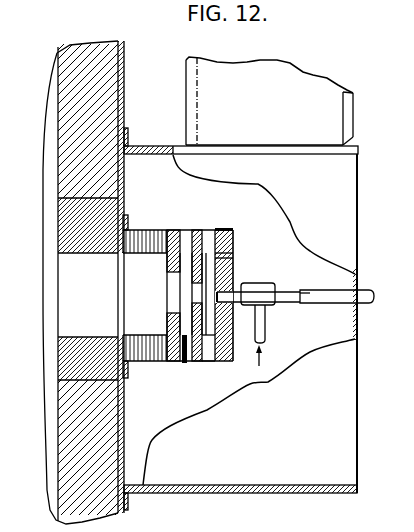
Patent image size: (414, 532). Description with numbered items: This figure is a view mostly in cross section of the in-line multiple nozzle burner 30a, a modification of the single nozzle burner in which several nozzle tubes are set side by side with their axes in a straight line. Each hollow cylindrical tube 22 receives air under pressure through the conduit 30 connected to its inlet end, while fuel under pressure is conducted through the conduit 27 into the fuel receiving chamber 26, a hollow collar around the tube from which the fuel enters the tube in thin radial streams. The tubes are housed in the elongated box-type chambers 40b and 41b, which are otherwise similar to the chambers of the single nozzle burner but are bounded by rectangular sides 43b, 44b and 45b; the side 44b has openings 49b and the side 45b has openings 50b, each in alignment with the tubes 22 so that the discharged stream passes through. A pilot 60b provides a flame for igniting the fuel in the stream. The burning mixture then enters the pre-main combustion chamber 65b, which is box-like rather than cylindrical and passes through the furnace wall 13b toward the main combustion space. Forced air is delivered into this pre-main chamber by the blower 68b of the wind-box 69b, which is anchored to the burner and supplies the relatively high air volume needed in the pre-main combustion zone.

The furnace wall 13b is at (92, 50).
The pre-main combustion chamber 65b is at (102, 331).
The multiple nozzle burner 30a is at (365, 142).
The wind-box 69b is at (350, 467).
The blower 68b is at (320, 92).
The box-type chamber 41b is at (183, 232).
The openings 50b is at (170, 278).
The openings 49b is at (195, 298).
The side 45b is at (167, 263).
The side 44b is at (232, 252).
The side 43b is at (236, 258).
The pilot 60b is at (182, 362).
The box-type chamber 40b is at (213, 362).
The hollow cylindrical tube 22 is at (237, 291).
The fuel receiving chamber 26 is at (270, 283).
The conduit 27 is at (266, 328).
The conduit 30 is at (327, 303).